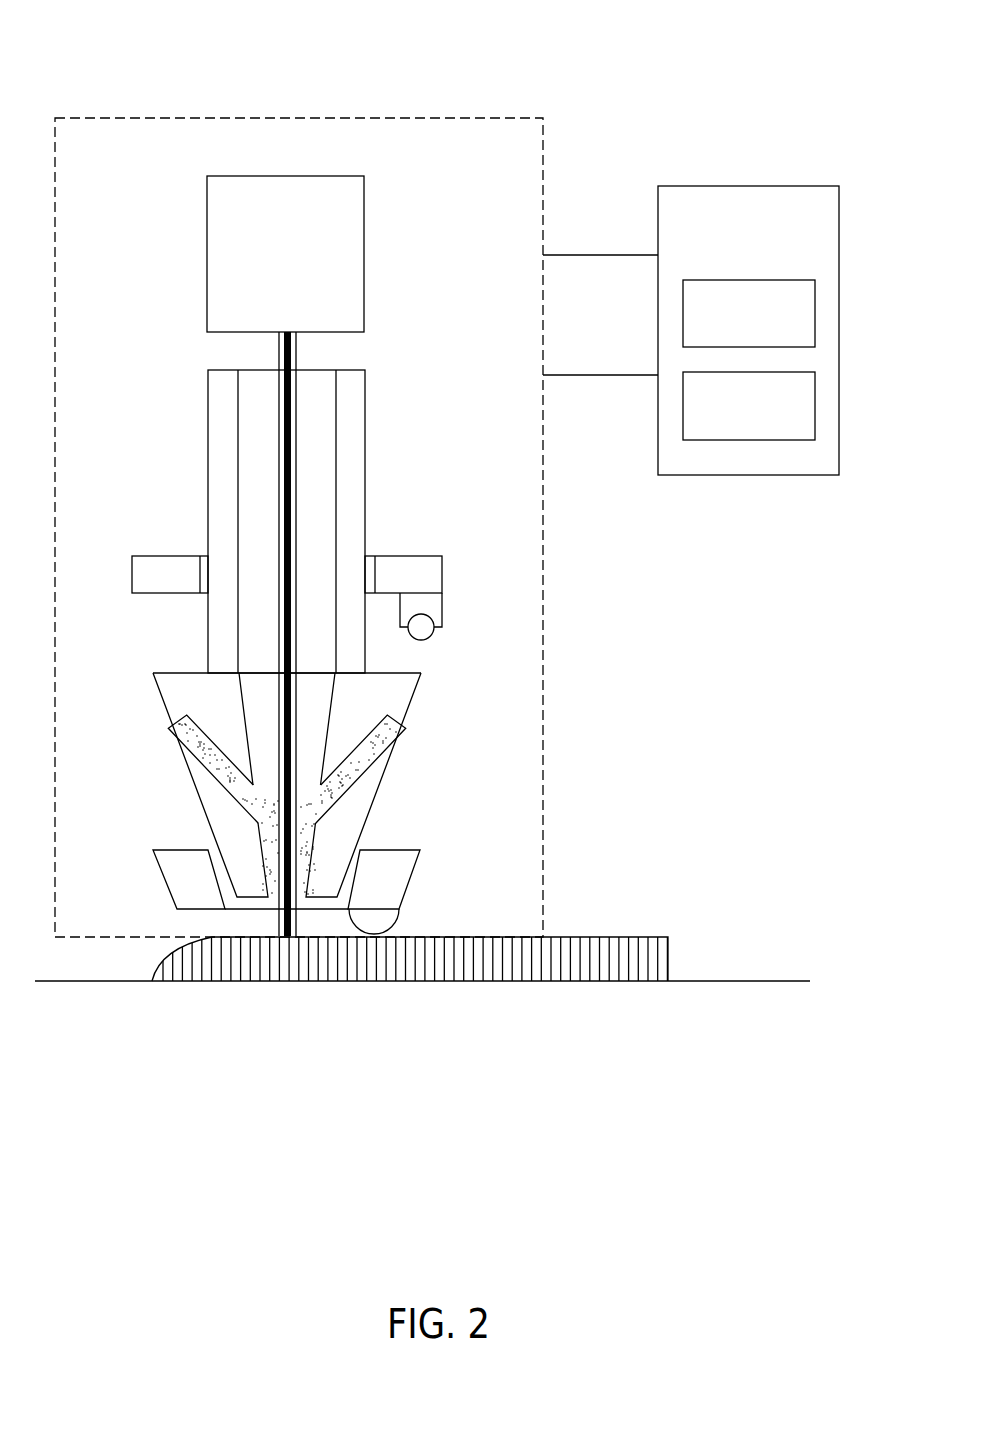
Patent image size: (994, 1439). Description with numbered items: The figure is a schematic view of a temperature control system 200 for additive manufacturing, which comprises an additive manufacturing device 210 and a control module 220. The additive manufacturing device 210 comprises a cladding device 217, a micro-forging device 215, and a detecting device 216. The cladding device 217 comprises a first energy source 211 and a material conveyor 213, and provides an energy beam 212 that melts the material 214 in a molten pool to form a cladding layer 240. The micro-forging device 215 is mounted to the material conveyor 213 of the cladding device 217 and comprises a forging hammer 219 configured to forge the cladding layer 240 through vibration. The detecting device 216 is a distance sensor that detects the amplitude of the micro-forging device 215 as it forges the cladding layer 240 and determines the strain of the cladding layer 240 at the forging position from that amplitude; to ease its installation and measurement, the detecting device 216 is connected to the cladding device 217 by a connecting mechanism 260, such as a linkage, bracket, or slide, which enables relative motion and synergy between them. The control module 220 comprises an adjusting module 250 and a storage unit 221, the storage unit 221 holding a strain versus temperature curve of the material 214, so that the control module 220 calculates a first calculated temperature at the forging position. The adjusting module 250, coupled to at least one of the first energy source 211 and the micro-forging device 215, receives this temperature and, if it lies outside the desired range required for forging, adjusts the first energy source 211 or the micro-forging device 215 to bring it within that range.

The temperature control system 200 is at (130, 38).
The additive manufacturing device 210 is at (480, 118).
The first energy source 211 is at (206, 252).
The energy beam 212 is at (278, 493).
The material conveyor 213 is at (202, 695).
The material 214 is at (170, 726).
The micro-forging device 215 is at (393, 858).
The detecting device 216 is at (432, 608).
The cladding device 217 is at (395, 350).
The forging hammer 219 is at (372, 918).
The control module 220 is at (750, 186).
The storage unit 221 is at (797, 372).
The cladding layer 240 is at (283, 965).
The adjusting module 250 is at (797, 280).
The connecting mechanism 260 is at (412, 556).